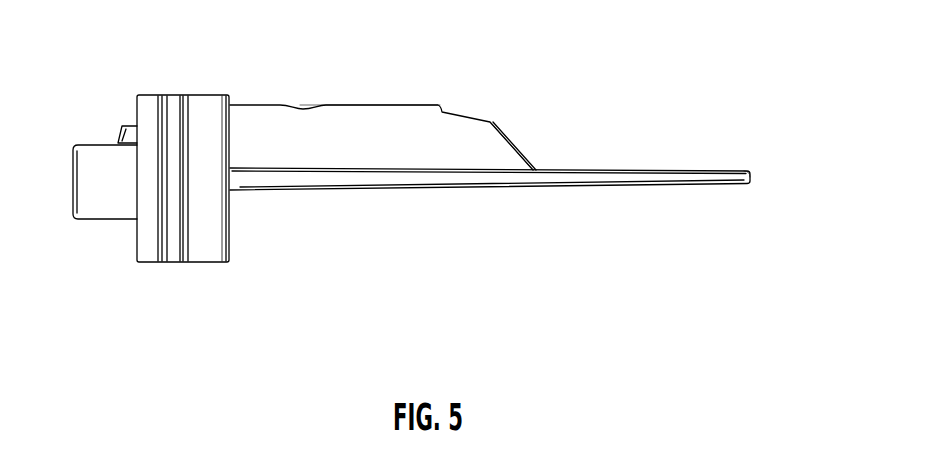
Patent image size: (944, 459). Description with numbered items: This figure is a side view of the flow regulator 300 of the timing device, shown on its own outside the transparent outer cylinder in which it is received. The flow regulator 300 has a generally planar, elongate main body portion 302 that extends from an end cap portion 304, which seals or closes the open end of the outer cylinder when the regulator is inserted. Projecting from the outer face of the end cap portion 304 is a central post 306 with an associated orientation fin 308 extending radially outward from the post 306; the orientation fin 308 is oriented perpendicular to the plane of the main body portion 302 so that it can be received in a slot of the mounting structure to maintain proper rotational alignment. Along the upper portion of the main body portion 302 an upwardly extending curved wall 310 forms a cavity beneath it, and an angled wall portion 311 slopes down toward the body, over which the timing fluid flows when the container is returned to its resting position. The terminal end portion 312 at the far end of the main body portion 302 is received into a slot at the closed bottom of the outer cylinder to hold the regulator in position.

The flow regulator 300 is at (410, 105).
The main body portion 302 is at (507, 177).
The end cap portion 304 is at (202, 243).
The central post 306 is at (103, 203).
The orientation fin 308 is at (127, 128).
The curved wall 310 is at (355, 113).
The angled wall portion 311 is at (525, 150).
The terminal end portion 312 is at (743, 170).